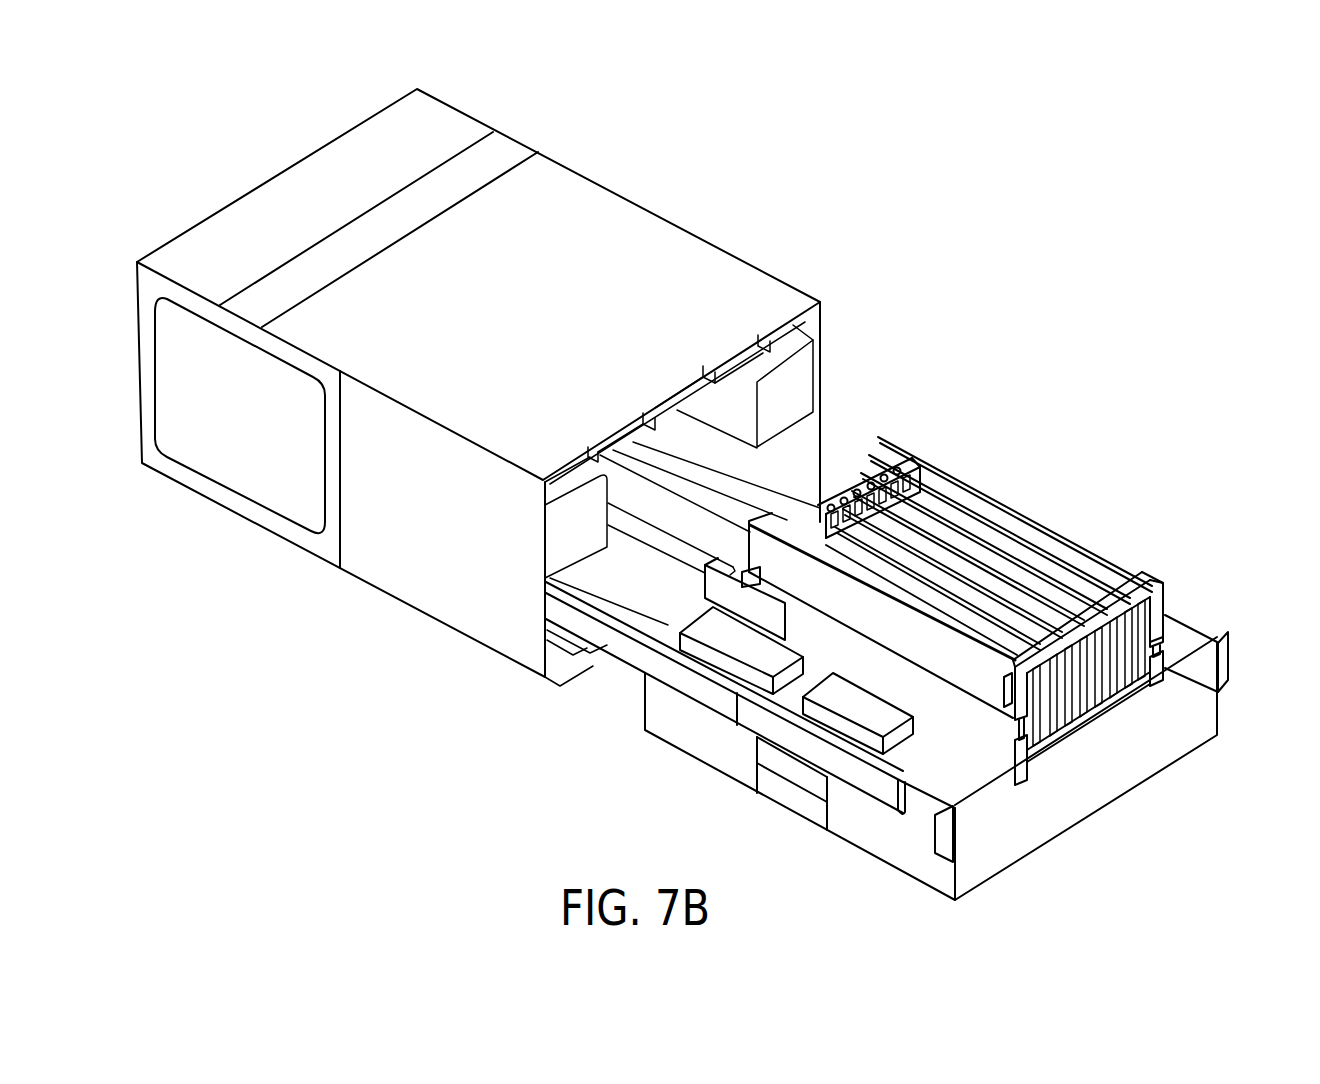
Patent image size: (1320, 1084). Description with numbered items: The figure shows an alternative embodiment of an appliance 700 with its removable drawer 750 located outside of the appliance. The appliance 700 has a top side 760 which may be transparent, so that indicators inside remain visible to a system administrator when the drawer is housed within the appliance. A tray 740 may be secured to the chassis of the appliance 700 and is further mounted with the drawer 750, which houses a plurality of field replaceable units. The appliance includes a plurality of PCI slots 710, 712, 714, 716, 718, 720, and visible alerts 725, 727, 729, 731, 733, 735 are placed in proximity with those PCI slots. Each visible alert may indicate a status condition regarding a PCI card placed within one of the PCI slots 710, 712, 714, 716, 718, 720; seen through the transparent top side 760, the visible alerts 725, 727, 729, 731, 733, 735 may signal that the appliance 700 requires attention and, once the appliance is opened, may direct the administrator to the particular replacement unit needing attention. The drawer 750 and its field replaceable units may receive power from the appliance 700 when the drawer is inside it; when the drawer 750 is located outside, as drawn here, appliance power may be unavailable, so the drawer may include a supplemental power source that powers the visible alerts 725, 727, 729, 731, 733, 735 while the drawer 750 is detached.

The appliance 700 is at (815, 113).
The PCI slot 710 is at (1053, 748).
The PCI slot 712 is at (1077, 742).
The PCI slot 714 is at (1080, 735).
The PCI slot 716 is at (1102, 725).
The PCI slot 718 is at (1127, 702).
The PCI slot 720 is at (1147, 688).
The visible alert 725 is at (832, 510).
The visible alert 727 is at (844, 500).
The visible alert 729 is at (857, 491).
The visible alert 731 is at (871, 484).
The visible alert 733 is at (884, 476).
The visible alert 735 is at (897, 468).
The tray 740 is at (625, 668).
The drawer 750 is at (1157, 777).
The top side 760 is at (662, 250).